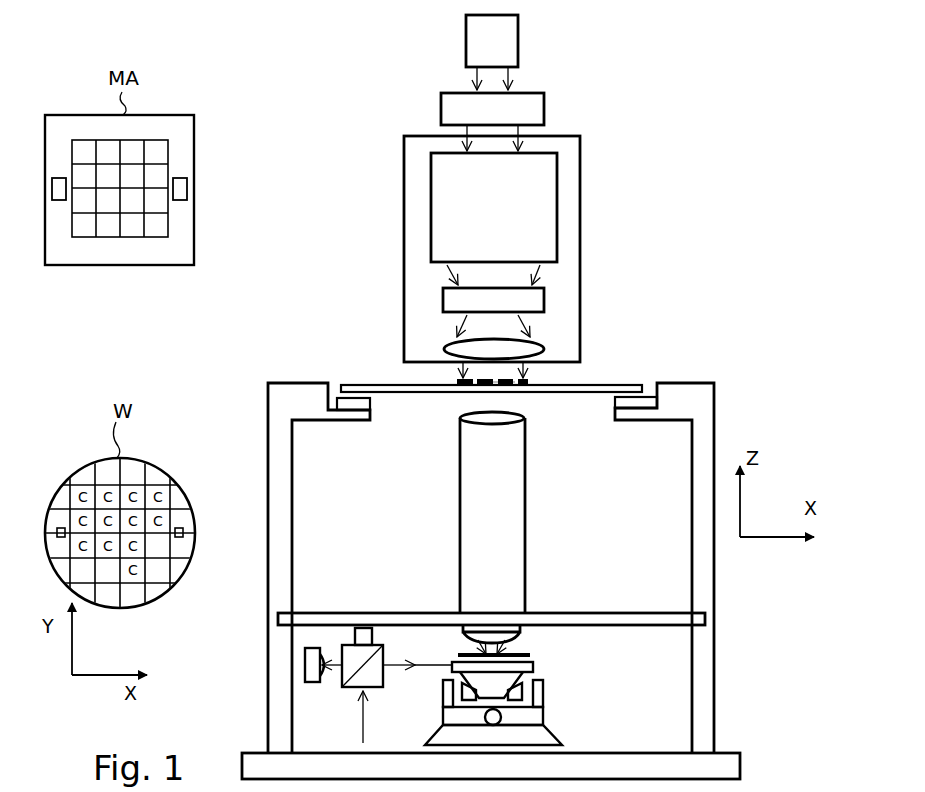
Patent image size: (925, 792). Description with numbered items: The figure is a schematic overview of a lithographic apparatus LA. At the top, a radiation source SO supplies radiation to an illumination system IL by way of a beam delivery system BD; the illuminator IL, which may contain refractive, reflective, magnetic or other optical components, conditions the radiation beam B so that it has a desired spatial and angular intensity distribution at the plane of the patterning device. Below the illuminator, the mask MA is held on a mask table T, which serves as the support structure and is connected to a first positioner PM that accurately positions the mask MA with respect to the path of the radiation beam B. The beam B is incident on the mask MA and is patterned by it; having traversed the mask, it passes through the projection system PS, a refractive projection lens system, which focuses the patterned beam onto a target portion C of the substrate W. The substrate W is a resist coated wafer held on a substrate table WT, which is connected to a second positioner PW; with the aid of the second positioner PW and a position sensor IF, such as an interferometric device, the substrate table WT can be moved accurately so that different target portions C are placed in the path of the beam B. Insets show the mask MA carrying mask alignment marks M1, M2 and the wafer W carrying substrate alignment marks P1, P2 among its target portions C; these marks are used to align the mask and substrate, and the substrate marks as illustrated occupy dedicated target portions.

The radiation source SO is at (519, 44).
The beam delivery system BD is at (544, 110).
The illumination system IL is at (581, 177).
The lithographic apparatus LA is at (734, 284).
The patterning device MA is at (211, 221).
The radiation beam B is at (493, 374).
The mask table T is at (625, 383).
The first positioner PM is at (644, 407).
The projection system PS is at (526, 501).
The substrate W is at (213, 529).
The substrate table WT is at (545, 667).
The second positioner PW is at (546, 712).
The position sensor IF is at (334, 691).
The mask alignment mark M1 is at (184, 178).
The mask alignment mark M2 is at (61, 178).
The target portion C is at (109, 208).
The substrate alignment mark P1 is at (61, 528).
The substrate alignment mark P2 is at (179, 528).